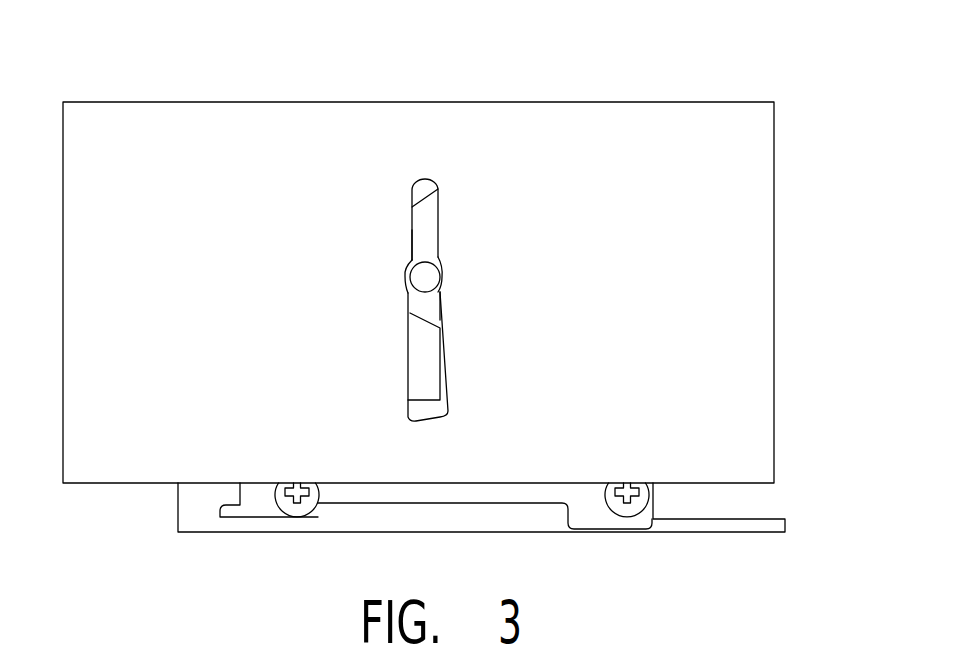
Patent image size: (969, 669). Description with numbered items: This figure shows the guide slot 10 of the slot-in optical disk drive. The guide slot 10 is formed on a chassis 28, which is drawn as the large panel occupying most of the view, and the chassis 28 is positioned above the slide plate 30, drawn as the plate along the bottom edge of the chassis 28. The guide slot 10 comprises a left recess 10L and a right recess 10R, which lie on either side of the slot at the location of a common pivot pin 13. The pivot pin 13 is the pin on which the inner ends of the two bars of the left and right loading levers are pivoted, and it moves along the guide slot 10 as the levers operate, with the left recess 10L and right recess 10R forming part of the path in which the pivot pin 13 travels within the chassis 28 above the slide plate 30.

The guide slot 10 is at (428, 208).
The left recess 10L is at (405, 277).
The right recess 10R is at (440, 284).
The pivot pin 13 is at (423, 275).
The chassis 28 is at (720, 250).
The slide plate 30 is at (503, 488).